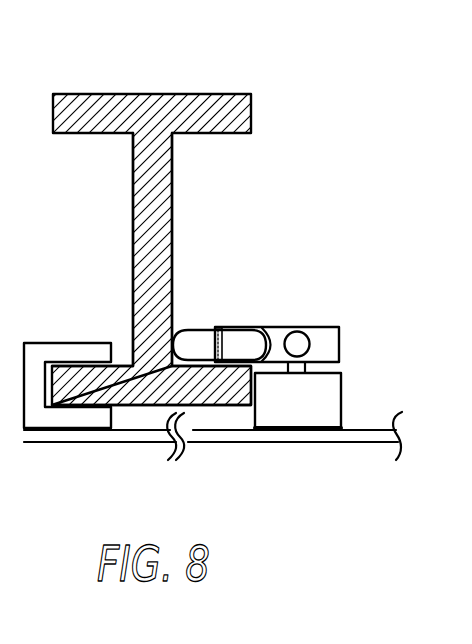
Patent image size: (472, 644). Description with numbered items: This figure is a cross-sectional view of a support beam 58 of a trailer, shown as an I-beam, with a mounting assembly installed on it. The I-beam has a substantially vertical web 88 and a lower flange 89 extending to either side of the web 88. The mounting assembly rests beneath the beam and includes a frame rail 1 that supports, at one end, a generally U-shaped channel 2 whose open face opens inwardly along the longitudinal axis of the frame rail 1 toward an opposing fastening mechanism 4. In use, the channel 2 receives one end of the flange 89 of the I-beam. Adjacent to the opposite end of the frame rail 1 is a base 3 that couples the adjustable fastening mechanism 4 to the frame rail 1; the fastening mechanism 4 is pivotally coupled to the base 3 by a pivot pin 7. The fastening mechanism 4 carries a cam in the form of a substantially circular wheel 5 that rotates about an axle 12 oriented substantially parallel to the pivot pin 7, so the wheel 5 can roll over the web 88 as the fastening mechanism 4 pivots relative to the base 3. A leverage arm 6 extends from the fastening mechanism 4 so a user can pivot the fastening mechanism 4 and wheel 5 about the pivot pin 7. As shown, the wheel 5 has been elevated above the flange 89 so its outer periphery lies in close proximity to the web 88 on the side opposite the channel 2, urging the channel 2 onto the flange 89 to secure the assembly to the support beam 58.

The support beam 58 is at (214, 94).
The web 88 is at (162, 208).
The flange 89 is at (97, 398).
The channel 2 is at (72, 352).
The frame rail 1 is at (241, 445).
The base 3 is at (321, 411).
The fastening mechanism 4 is at (332, 325).
The wheel 5 is at (200, 338).
The axle 12 is at (225, 342).
The leverage arm 6 is at (298, 335).
The pivot pin 7 is at (307, 367).